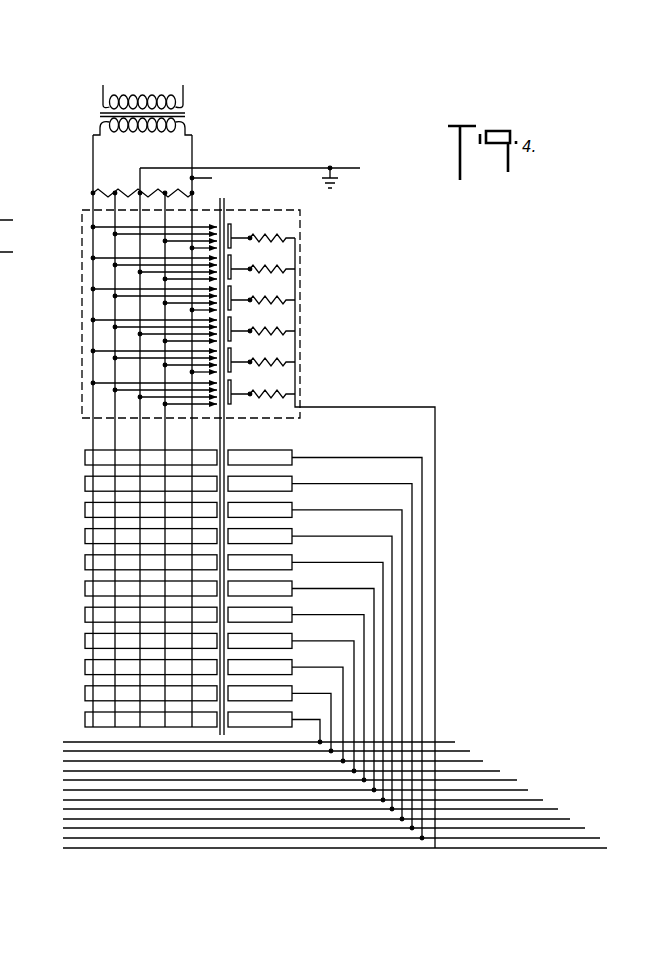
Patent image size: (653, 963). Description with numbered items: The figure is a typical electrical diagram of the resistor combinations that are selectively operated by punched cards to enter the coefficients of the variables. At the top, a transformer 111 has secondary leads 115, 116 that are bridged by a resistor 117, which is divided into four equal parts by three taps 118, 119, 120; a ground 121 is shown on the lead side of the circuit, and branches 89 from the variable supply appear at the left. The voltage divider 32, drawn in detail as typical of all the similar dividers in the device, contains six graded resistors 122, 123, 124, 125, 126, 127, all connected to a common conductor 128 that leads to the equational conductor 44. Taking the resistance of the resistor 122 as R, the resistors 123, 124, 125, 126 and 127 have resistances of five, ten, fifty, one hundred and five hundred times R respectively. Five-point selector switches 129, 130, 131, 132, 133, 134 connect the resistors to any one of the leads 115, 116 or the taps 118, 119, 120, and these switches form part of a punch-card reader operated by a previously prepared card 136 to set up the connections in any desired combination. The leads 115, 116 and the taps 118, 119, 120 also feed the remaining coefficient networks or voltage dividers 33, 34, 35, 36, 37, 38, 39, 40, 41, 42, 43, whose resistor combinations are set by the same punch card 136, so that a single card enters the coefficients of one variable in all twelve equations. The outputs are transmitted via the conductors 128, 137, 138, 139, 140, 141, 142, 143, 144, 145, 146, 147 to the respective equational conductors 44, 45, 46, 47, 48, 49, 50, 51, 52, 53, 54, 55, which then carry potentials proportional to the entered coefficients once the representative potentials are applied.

The transformer 111 is at (186, 112).
The secondary lead 115 is at (92, 163).
The secondary lead 116 is at (195, 165).
The resistor 117 is at (135, 190).
The tap 118 is at (122, 202).
The tap 119 is at (147, 202).
The tap 120 is at (174, 202).
The ground 121 is at (340, 183).
The graded resistor 122 is at (289, 236).
The graded resistor 123 is at (289, 267).
The graded resistor 124 is at (289, 298).
The graded resistor 125 is at (289, 329).
The graded resistor 126 is at (289, 360).
The graded resistor 127 is at (289, 392).
The common conductor 128 is at (372, 407).
The five-point selector switch 129 is at (233, 236).
The five-point selector switch 130 is at (233, 267).
The five-point selector switch 131 is at (233, 298).
The five-point selector switch 132 is at (233, 329).
The five-point selector switch 133 is at (233, 360).
The five-point selector switch 134 is at (233, 392).
The punch card 136 is at (225, 201).
The output conductor 137 is at (351, 457).
The output conductor 138 is at (351, 483).
The output conductor 139 is at (351, 509).
The output conductor 140 is at (351, 535).
The output conductor 141 is at (348, 561).
The output conductor 142 is at (346, 587).
The output conductor 143 is at (342, 613).
The output conductor 144 is at (337, 639).
The output conductor 145 is at (332, 665).
The output conductor 146 is at (327, 691).
The output conductor 147 is at (322, 717).
The voltage divider 32 is at (82, 302).
The branches 89 is at (9, 255).
The voltage divider 33 is at (85, 458).
The voltage divider 34 is at (85, 484).
The voltage divider 35 is at (85, 510).
The voltage divider 36 is at (85, 536).
The voltage divider 37 is at (85, 562).
The voltage divider 38 is at (85, 588).
The voltage divider 39 is at (85, 615).
The voltage divider 40 is at (85, 641).
The voltage divider 41 is at (85, 667).
The voltage divider 42 is at (85, 693).
The voltage divider 43 is at (85, 720).
The equational conductor 44 is at (63, 848).
The equational conductor 45 is at (600, 838).
The equational conductor 46 is at (585, 828).
The equational conductor 47 is at (570, 819).
The equational conductor 48 is at (558, 809).
The equational conductor 49 is at (543, 800).
The equational conductor 50 is at (528, 790).
The equational conductor 51 is at (517, 780).
The equational conductor 52 is at (500, 771).
The equational conductor 53 is at (483, 761).
The equational conductor 54 is at (470, 751).
The equational conductor 55 is at (63, 742).